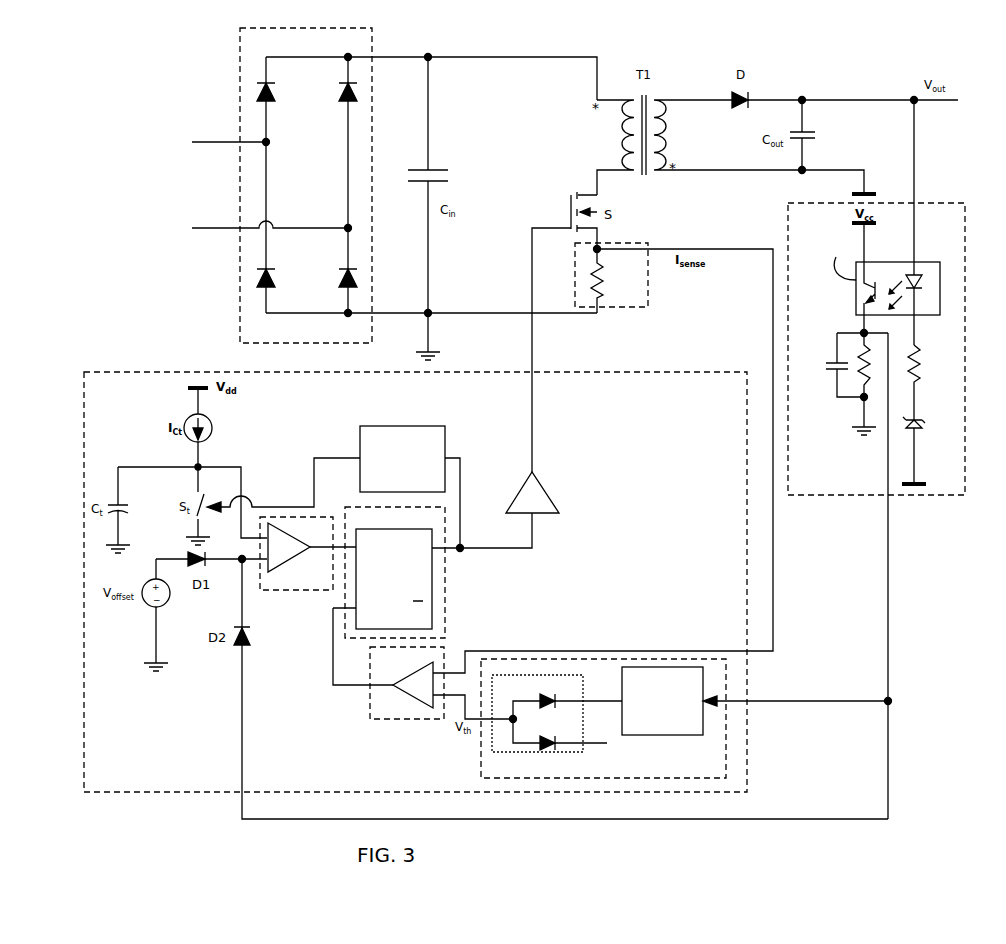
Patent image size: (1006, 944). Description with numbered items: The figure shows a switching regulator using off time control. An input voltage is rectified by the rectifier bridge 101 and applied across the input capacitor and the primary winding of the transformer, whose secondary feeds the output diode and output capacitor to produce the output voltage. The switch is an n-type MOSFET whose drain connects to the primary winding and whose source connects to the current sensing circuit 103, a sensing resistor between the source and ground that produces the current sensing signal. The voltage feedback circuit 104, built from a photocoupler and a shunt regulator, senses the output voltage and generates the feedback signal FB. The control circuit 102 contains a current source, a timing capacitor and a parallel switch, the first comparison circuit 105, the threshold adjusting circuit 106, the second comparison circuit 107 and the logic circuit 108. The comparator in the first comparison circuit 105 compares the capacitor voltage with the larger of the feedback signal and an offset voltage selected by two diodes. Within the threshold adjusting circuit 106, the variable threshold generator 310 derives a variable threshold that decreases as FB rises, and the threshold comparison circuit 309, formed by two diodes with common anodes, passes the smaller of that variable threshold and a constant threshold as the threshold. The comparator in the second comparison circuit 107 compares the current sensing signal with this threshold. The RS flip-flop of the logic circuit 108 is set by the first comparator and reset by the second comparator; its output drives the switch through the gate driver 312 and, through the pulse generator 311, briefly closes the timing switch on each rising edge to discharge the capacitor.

The rectifier bridge 101 is at (240, 288).
The control circuit 102 is at (84, 740).
The current sensing circuit 103 is at (627, 307).
The voltage feedback circuit 104 is at (893, 497).
The first comparison circuit 105 is at (329, 590).
The threshold adjusting circuit 106 is at (480, 745).
The second comparison circuit 107 is at (402, 722).
The logic circuit 108 is at (445, 597).
The threshold comparison circuit 309 is at (548, 752).
The variable threshold generator 310 is at (677, 735).
The pulse generator 311 is at (387, 426).
The gate driver 312 is at (560, 514).